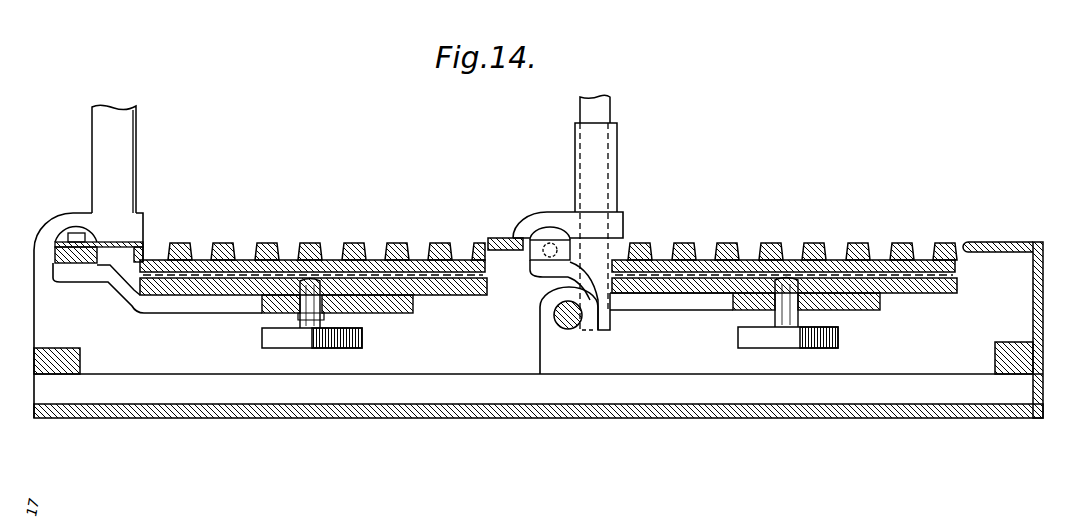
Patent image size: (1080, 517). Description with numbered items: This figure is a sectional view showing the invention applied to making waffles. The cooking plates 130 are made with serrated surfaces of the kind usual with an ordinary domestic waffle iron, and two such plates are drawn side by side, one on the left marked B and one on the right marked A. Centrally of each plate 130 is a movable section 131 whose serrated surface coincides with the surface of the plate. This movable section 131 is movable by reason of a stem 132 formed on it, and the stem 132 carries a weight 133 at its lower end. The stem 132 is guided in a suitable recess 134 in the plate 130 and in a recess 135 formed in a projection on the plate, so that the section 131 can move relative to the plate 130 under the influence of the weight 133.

The cooking plates 130 is at (315, 243).
The movable section 131 is at (250, 291).
The stem 132 is at (305, 322).
The weight 133 is at (352, 350).
The recess 134 is at (296, 280).
The recess 135 is at (323, 316).
The rack A is at (783, 260).
The rack B is at (313, 269).